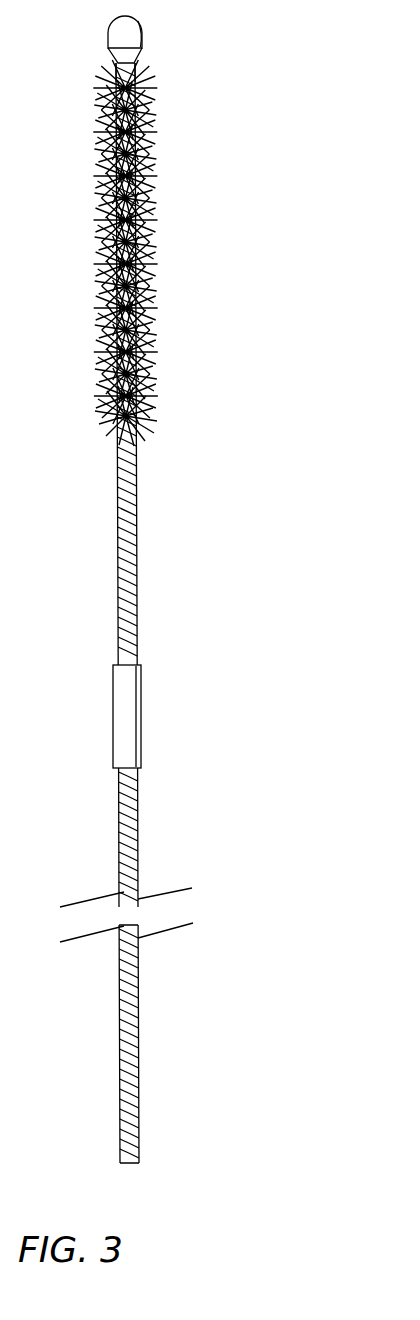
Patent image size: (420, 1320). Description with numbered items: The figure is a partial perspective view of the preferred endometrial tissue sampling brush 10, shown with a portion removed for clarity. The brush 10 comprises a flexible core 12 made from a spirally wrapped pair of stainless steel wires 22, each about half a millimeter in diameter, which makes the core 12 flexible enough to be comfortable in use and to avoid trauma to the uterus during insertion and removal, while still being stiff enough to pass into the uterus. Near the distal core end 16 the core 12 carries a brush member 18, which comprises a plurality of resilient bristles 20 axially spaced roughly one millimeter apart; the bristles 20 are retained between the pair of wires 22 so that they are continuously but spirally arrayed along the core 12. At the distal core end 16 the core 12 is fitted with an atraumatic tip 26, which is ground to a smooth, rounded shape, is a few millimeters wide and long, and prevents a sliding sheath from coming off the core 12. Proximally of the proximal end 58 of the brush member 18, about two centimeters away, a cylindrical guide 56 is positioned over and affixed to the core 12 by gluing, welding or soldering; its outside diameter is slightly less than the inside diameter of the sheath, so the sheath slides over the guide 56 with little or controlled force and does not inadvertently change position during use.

The brush 10 is at (127, 587).
The flexible core 12 is at (129, 613).
The distal core end 16 is at (134, 68).
The brush member 18 is at (127, 277).
The resilient bristles 20 is at (150, 158).
The stainless steel wires 22 is at (118, 581).
The atraumatic tip 26 is at (108, 26).
The cylindrical guide 56 is at (118, 680).
The proximal end of the brush member 58 is at (99, 427).